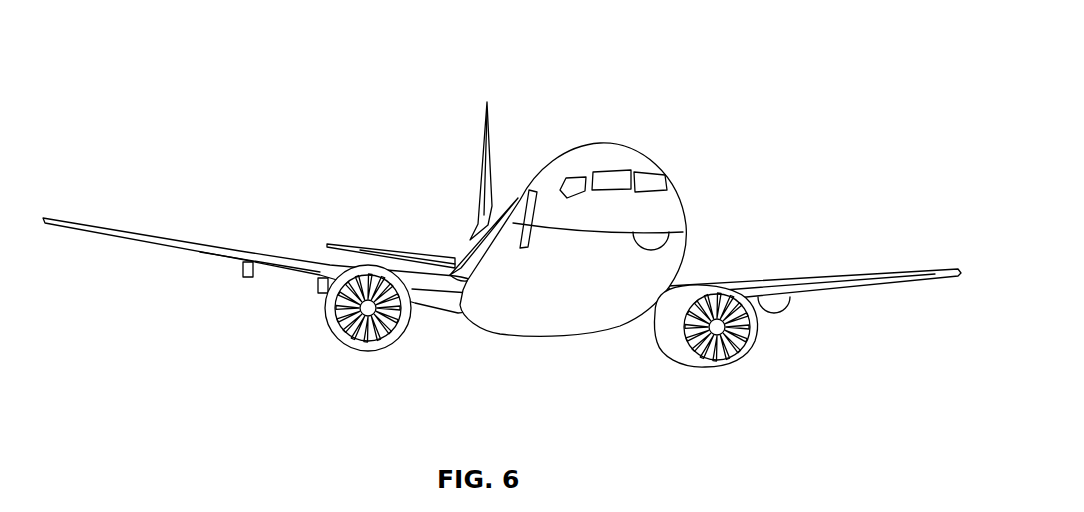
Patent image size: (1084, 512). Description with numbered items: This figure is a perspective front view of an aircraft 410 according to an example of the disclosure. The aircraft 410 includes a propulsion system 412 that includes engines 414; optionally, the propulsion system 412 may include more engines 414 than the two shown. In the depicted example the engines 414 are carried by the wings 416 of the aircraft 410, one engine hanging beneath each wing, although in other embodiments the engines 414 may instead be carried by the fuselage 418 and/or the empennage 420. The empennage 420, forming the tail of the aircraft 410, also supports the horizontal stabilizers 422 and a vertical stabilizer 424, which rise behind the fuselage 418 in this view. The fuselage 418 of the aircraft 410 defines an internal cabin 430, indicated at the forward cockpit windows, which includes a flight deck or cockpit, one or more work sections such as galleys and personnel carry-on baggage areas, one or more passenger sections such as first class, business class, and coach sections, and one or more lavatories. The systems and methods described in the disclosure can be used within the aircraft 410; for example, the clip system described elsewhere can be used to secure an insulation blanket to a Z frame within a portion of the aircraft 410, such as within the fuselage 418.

The aircraft 410 is at (273, 52).
The propulsion system 412 is at (266, 362).
The engines 414 is at (363, 352).
The wings 416 is at (168, 242).
The fuselage 418 is at (680, 204).
The empennage 420 is at (475, 230).
The horizontal stabilizers 422 is at (364, 245).
The vertical stabilizer 424 is at (483, 135).
The internal cabin 430 is at (610, 172).